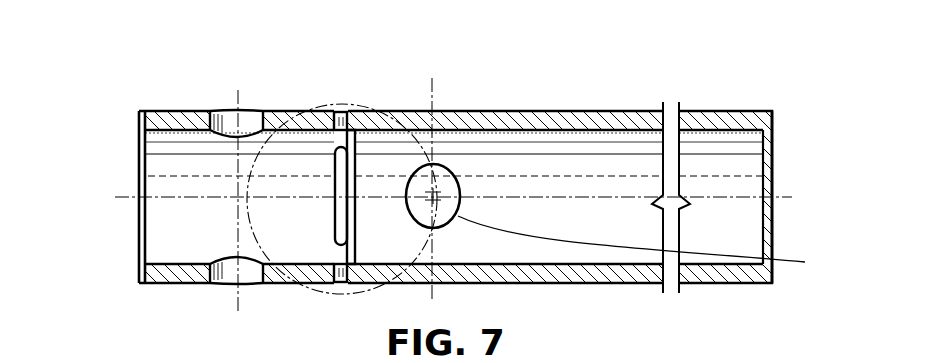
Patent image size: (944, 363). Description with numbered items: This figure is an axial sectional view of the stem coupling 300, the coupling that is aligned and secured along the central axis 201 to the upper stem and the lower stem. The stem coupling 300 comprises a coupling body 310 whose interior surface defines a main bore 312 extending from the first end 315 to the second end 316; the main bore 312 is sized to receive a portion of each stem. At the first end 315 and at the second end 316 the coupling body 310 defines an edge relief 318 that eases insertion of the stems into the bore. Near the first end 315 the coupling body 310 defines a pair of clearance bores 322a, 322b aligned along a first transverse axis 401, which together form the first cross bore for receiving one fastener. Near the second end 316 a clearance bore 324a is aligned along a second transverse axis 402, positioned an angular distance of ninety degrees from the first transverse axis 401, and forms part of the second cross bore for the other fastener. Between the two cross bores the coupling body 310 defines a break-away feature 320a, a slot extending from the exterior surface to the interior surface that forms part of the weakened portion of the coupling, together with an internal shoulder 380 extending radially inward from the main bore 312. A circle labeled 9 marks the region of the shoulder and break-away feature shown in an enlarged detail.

The stem coupling 300 is at (178, 54).
The coupling body 310 is at (170, 285).
The main bore 312 is at (738, 153).
The first end 315 is at (139, 157).
The second end 316 is at (768, 215).
The edge relief 318 is at (768, 178).
The central axis 201 is at (190, 198).
The first transverse axis 401 is at (240, 108).
The clearance bore 322a is at (222, 110).
The clearance bore 322b is at (222, 282).
The internal shoulder 380 is at (366, 110).
The break-away feature 320a is at (342, 224).
The detail circle for FIG. 9 is at (323, 108).
The second transverse axis 402 is at (453, 190).
The clearance bore 324a is at (660, 246).